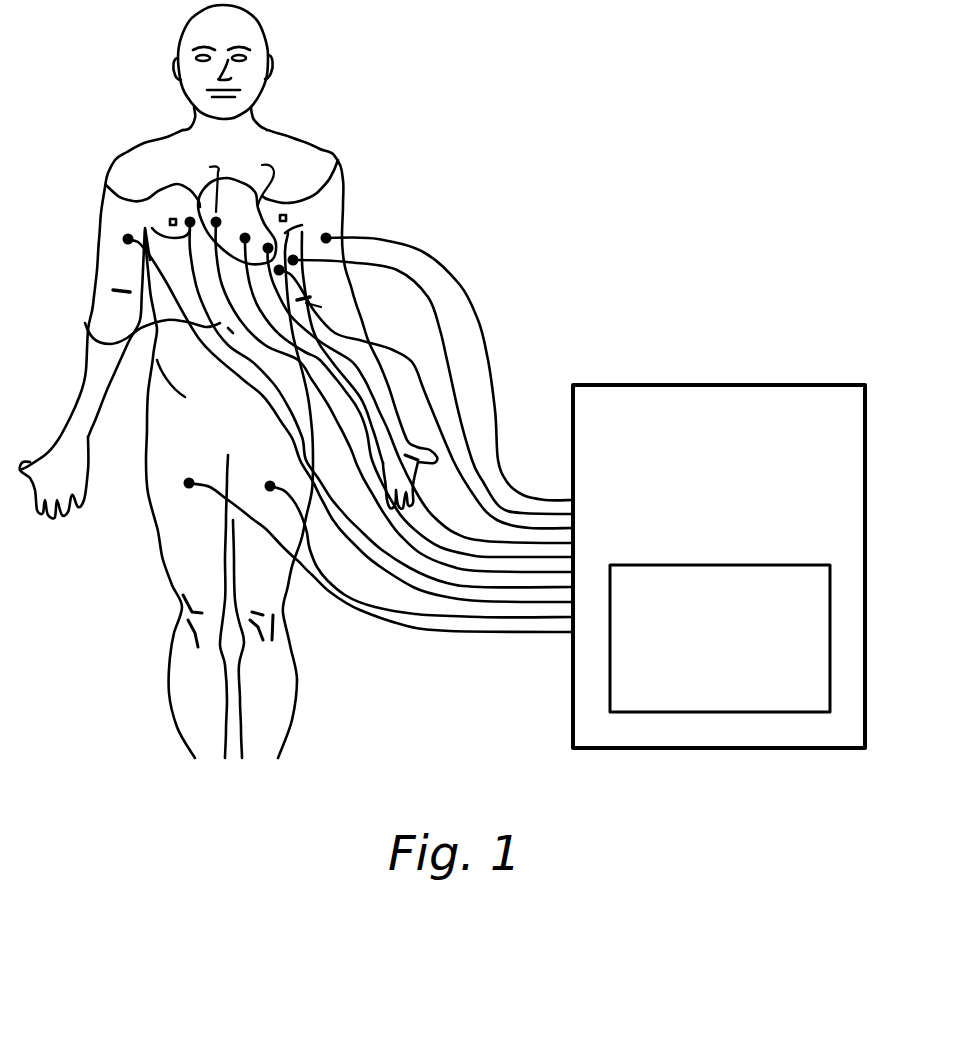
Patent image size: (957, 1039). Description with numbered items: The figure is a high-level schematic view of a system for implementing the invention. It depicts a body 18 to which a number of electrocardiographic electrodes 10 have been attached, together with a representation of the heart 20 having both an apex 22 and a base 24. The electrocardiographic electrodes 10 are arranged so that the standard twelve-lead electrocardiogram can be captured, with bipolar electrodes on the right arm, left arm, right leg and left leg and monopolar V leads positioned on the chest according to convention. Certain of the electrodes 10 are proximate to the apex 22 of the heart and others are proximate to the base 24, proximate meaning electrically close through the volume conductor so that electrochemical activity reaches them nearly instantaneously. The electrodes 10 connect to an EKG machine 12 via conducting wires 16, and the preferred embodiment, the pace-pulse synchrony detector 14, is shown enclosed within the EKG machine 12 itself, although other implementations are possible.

The electrocardiographic electrodes 10 is at (160, 92).
The EKG machine 12 is at (837, 384).
The pace-pulse synchrony detector 14 is at (755, 712).
The conducting wires 16 is at (485, 632).
The body 18 is at (330, 152).
The heart 20 is at (316, 162).
The apex of the heart 22 is at (85, 323).
The base of the heart 24 is at (106, 186).